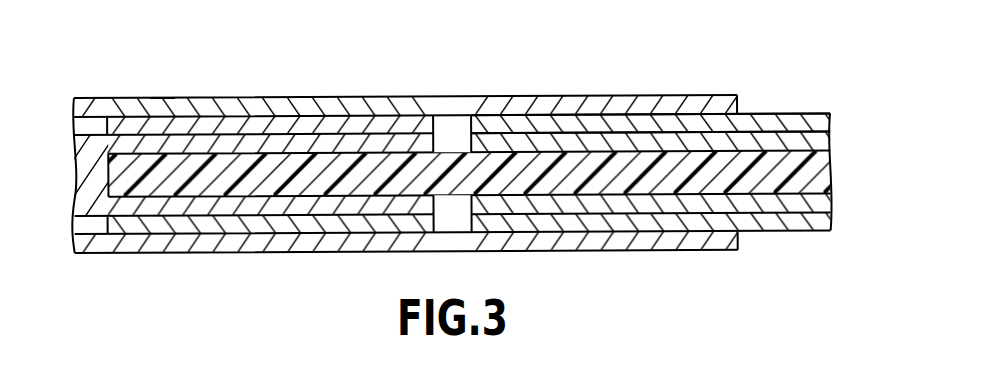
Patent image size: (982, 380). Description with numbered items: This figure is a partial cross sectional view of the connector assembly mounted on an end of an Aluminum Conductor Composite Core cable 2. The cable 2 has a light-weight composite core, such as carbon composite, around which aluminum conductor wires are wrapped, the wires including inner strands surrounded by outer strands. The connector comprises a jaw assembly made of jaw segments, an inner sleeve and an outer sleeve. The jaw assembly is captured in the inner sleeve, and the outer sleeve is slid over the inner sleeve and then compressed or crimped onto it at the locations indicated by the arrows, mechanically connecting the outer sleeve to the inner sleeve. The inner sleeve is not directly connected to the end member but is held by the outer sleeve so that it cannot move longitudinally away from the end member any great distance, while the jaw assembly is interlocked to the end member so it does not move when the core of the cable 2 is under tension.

The Aluminum Conductor Composite Core (ACCC) cable 2 is at (431, 159).